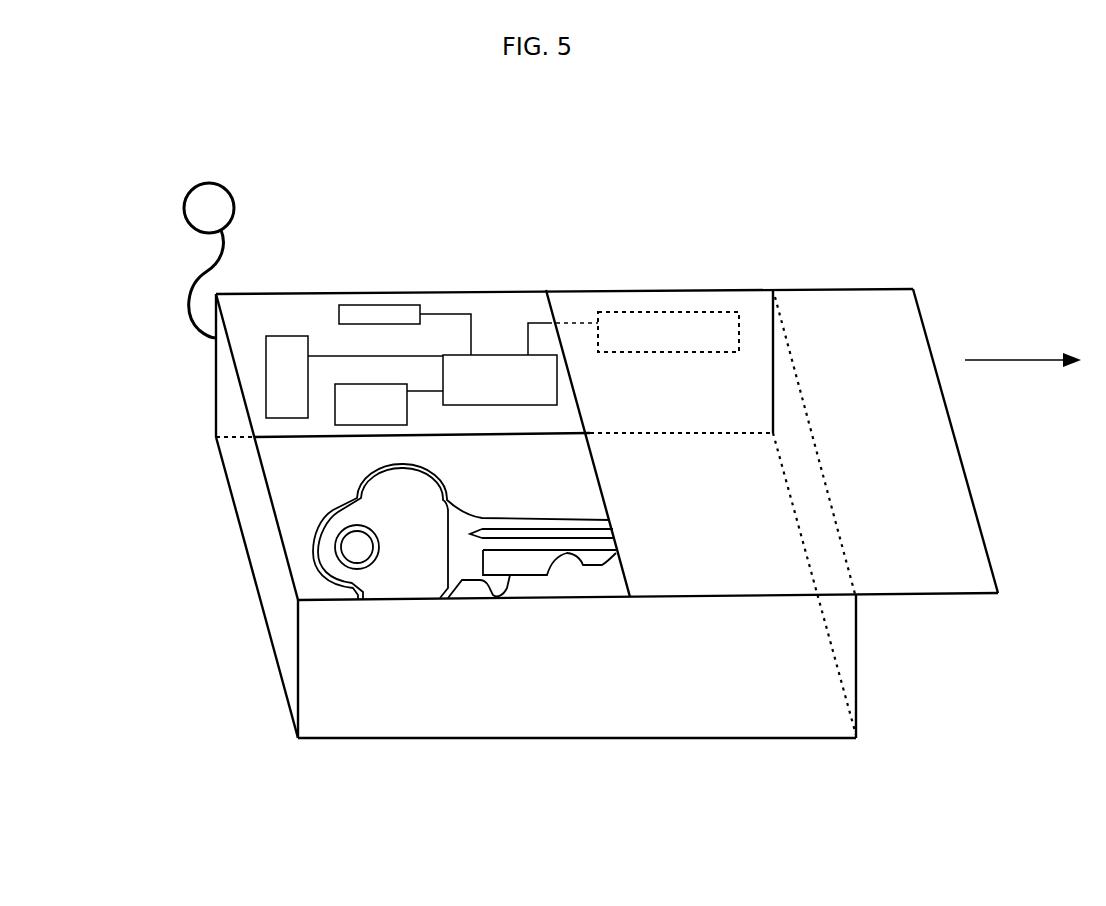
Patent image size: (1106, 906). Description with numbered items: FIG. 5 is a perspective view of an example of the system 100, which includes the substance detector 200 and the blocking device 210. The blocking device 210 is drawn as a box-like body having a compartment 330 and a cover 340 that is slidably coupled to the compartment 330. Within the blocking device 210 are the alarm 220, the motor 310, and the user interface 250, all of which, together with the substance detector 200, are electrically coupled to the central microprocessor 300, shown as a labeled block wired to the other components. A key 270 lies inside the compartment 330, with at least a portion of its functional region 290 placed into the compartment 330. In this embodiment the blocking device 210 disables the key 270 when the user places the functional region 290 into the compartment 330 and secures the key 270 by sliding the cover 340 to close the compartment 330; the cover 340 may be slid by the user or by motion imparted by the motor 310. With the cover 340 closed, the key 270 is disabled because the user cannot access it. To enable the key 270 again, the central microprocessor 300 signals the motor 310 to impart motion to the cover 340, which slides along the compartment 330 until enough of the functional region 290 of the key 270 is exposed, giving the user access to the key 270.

The system 100 is at (766, 86).
The substance detector 200 is at (288, 322).
The blocking device 210 is at (676, 713).
The alarm 220 is at (335, 404).
The user interface 250 is at (380, 304).
The key 270 is at (372, 578).
The functional region 290 is at (595, 573).
The central microprocessor 300 is at (498, 355).
The motor 310 is at (668, 311).
The compartment 330 is at (775, 685).
The cover 340 is at (942, 548).